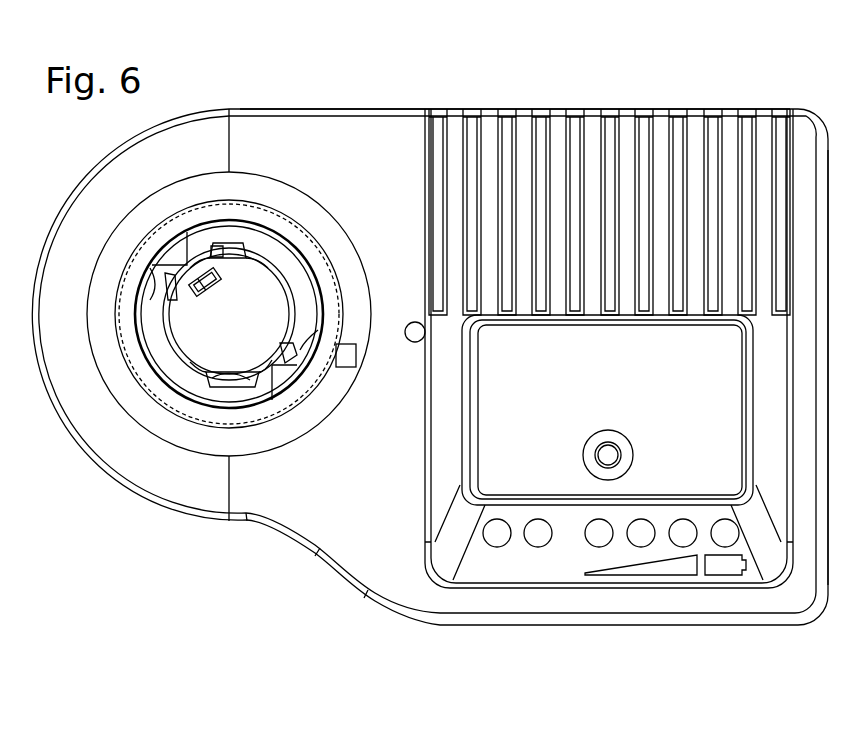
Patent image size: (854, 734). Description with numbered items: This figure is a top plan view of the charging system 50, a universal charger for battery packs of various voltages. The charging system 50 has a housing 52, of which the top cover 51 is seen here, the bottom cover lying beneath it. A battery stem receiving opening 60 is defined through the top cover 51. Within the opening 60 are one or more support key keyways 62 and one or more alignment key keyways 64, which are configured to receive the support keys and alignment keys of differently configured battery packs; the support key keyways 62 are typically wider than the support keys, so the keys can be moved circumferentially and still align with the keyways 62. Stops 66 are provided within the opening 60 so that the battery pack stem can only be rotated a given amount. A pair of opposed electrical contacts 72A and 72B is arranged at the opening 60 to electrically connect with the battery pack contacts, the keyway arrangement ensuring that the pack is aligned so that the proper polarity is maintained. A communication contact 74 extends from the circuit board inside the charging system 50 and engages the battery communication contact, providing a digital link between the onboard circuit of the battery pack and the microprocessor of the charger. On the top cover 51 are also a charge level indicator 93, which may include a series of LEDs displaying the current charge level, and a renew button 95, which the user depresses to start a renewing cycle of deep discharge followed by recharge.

The charging system 50 is at (425, 80).
The top cover 51 is at (330, 118).
The housing 52 is at (796, 107).
The battery stem receiving opening 60 is at (282, 250).
The support key keyways 62 is at (230, 243).
The alignment key keyways 64 is at (288, 343).
The stops 66 is at (175, 255).
The electrical contact 72A is at (217, 383).
The electrical contact 72B is at (222, 253).
The communication contact 74 is at (205, 287).
The charge level indicator 93 is at (705, 575).
The renew button 95 is at (622, 455).